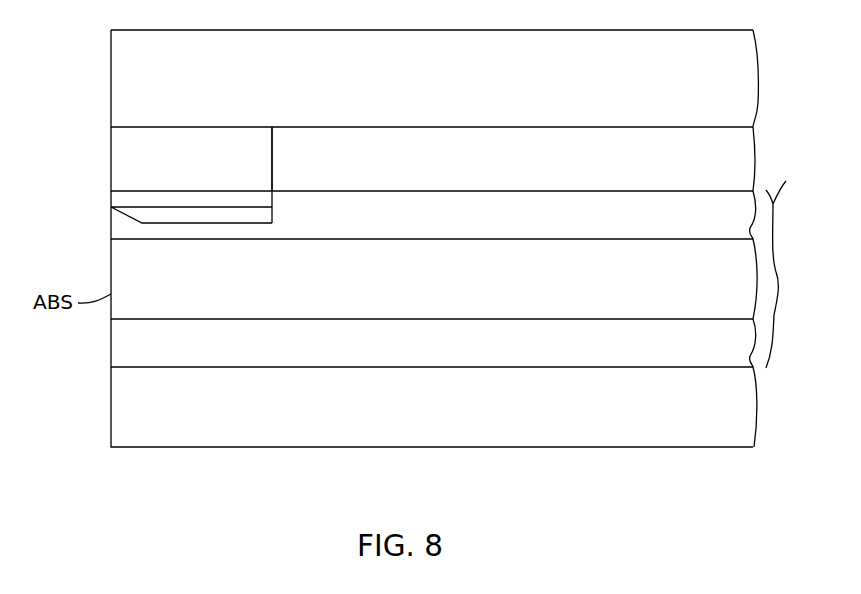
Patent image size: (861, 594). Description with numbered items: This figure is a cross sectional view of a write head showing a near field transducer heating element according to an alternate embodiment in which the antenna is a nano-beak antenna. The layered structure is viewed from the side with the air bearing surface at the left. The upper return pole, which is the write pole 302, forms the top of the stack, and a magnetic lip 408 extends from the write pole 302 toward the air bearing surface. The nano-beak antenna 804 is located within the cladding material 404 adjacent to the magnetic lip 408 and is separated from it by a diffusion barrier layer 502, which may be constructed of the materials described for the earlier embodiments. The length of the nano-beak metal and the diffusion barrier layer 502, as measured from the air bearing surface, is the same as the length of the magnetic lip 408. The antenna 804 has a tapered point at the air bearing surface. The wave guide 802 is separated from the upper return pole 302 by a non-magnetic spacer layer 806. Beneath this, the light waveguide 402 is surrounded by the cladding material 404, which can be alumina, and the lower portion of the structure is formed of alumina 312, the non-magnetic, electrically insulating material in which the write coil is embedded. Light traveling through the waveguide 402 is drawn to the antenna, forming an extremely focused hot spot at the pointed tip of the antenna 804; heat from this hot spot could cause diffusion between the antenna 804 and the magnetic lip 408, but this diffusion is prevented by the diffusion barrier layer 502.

The write pole 302 is at (460, 77).
The alumina 312 is at (432, 407).
The light waveguide 402 is at (432, 279).
The cladding material 404 is at (432, 279).
The magnetic lip 408 is at (180, 159).
The diffusion barrier layer 502 is at (263, 200).
The wave guide 802 is at (796, 268).
The antenna 804 is at (269, 223).
The non-magnetic spacer layer 806 is at (572, 157).